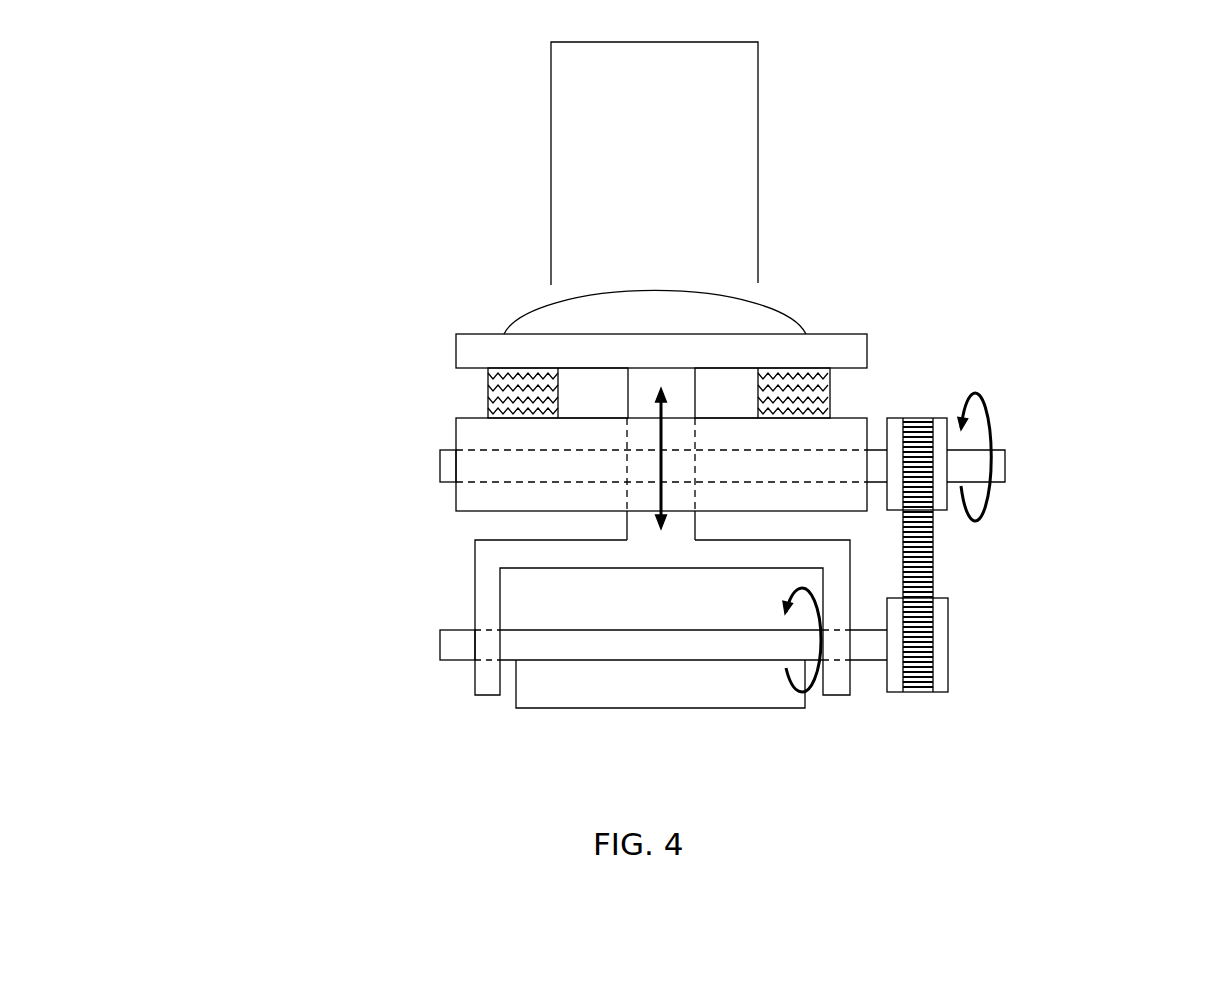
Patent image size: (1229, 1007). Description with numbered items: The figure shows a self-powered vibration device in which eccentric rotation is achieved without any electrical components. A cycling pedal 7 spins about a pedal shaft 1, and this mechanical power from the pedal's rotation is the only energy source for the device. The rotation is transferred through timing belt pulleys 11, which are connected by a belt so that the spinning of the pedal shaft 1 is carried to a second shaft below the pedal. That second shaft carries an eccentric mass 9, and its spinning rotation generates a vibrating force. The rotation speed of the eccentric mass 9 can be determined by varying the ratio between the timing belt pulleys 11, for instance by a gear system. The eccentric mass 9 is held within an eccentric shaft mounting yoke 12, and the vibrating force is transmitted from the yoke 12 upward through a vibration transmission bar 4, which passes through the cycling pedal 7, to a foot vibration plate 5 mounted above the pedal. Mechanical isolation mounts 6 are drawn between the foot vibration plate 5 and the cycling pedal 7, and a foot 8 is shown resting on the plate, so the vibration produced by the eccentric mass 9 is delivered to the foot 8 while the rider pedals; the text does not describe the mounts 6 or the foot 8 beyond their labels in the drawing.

The pedal shaft 1 is at (1085, 365).
The vibration transmission bar 4 is at (706, 391).
The foot vibration plate 5 is at (446, 320).
The mechanical isolation mounts 6 is at (476, 393).
The cycling pedal 7 is at (446, 434).
The foot 8 is at (655, 188).
The eccentric mass 9 is at (654, 723).
The timing belt pulleys 11 is at (958, 530).
The eccentric shaft mounting yoke 12 is at (463, 560).